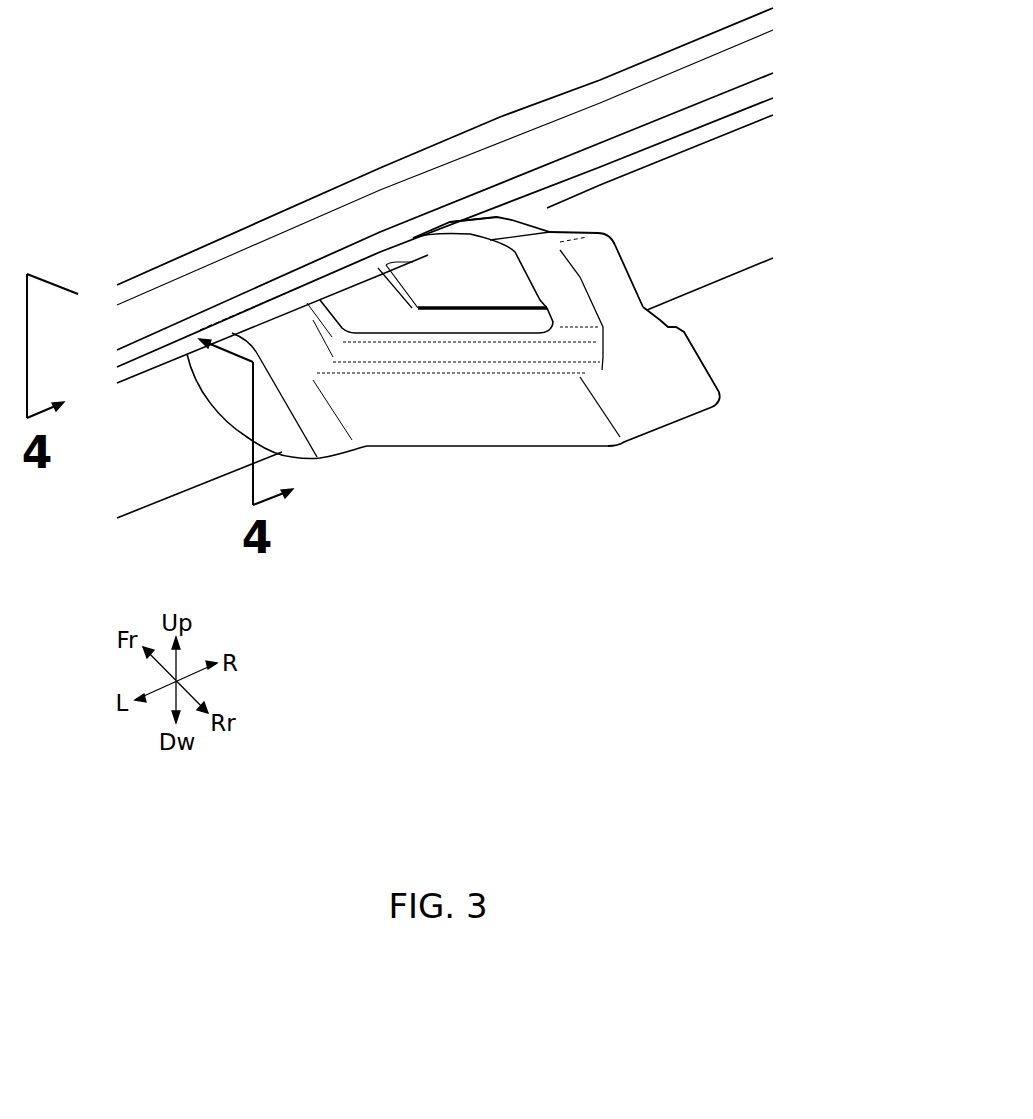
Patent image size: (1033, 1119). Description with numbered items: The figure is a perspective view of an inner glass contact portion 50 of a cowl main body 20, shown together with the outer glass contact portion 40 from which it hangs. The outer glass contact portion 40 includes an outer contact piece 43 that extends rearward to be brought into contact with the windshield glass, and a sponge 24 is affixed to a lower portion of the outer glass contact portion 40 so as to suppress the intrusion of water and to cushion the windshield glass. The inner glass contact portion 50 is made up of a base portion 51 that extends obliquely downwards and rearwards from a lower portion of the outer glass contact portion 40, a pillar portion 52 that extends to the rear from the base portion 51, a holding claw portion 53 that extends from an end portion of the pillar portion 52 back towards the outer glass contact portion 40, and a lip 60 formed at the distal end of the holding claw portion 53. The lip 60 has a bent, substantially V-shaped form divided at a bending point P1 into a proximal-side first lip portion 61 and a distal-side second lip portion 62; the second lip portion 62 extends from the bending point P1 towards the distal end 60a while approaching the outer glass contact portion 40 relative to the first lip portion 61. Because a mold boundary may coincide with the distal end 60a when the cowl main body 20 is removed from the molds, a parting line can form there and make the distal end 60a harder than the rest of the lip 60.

The cowl main body 20 is at (514, 110).
The sponge 24 is at (617, 163).
The outer glass contact portion 40 is at (453, 200).
The outer contact piece 43 is at (282, 287).
The inner glass contact portion 50 is at (453, 401).
The base portion 51 is at (293, 438).
The pillar portion 52 is at (402, 417).
The holding claw portion 53 is at (570, 305).
The lip 60 is at (481, 379).
The distal end of lip 60a is at (410, 243).
The first lip portion 61 is at (500, 262).
The second lip portion 62 is at (455, 245).
The bending point P1 is at (497, 217).